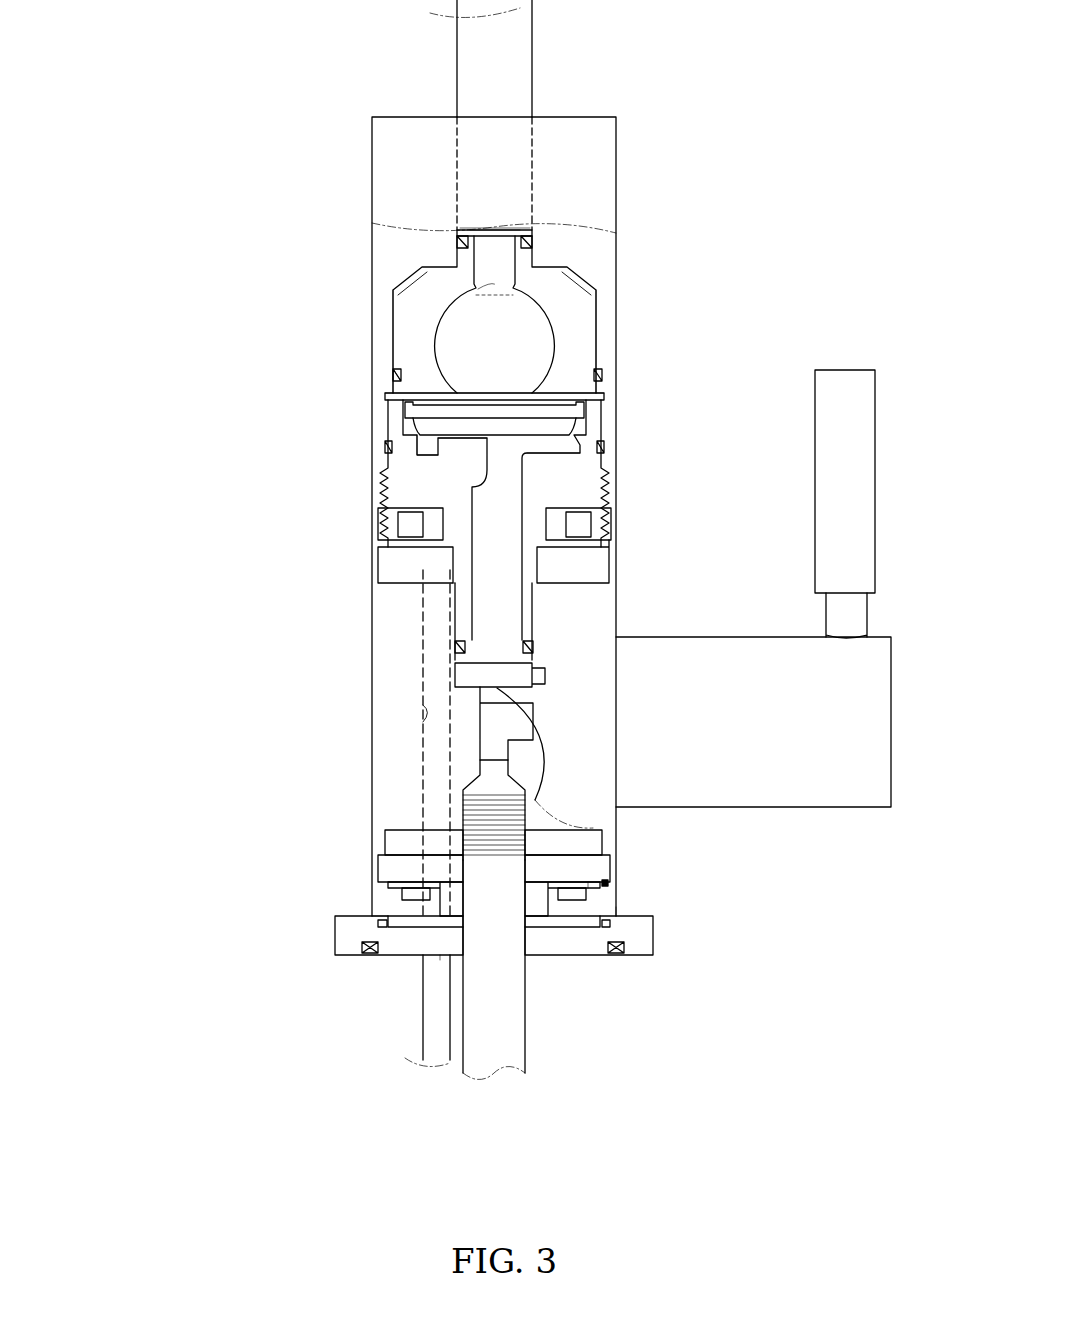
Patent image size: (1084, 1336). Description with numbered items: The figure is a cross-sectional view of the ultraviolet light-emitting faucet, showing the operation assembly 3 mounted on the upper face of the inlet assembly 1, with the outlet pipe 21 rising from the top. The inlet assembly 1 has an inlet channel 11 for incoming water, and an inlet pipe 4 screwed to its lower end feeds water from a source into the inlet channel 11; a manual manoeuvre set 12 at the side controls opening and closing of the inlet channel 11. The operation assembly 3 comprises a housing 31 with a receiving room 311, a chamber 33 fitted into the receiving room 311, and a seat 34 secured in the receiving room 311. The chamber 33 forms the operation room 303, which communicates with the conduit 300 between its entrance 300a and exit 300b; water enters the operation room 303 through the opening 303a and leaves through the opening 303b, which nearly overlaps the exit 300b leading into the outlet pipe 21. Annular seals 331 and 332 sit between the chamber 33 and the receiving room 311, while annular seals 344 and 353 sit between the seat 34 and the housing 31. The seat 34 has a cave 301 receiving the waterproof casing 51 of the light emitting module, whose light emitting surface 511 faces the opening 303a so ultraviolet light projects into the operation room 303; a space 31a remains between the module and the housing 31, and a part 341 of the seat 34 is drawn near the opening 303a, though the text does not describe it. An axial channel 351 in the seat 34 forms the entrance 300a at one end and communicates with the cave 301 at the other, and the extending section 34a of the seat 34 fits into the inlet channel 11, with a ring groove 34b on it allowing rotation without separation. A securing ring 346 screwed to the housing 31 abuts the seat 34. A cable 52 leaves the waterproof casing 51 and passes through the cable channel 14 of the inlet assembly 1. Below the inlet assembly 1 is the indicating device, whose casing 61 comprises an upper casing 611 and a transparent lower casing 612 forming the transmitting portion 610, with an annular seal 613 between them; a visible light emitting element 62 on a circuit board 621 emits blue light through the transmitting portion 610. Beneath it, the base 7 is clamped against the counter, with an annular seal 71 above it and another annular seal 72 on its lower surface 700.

The inlet assembly 1 is at (348, 841).
The outlet pipe 21 is at (535, 57).
The operation assembly 3 is at (350, 318).
The housing 31 is at (380, 297).
The space 31a is at (597, 410).
The chamber 33 is at (403, 323).
The operation room 303 is at (457, 322).
The opening 303a is at (455, 385).
The opening 303b is at (487, 230).
The conduit 300 is at (731, 597).
The entrance 300a is at (560, 602).
The exit 300b is at (503, 225).
The receiving room 311 is at (422, 270).
The annular seal 331 is at (397, 375).
The annular seal 332 is at (457, 238).
The seat plate 341 is at (400, 412).
The annular seal 344 is at (387, 447).
The securing ring 346 is at (393, 520).
The seat 34 is at (480, 545).
The extending section 34a is at (457, 603).
The ring groove 34b is at (427, 640).
The axial channel 351 is at (510, 563).
The annular seal 353 is at (477, 683).
The cave 301 is at (560, 447).
The waterproof casing 51 is at (418, 445).
The light emitting surface 511 is at (428, 438).
The cable 52 is at (450, 572).
The cable channel 14 is at (432, 718).
The inlet channel 11 is at (480, 692).
The inlet pipe 4 is at (512, 1015).
The casing 61 is at (207, 990).
The upper casing 611 is at (380, 872).
The lower casing 612 is at (380, 897).
The annular seal 613 is at (585, 882).
The circuit board 621 is at (605, 881).
The visible light emitting element 62 is at (415, 897).
The transmitting portion 610 is at (618, 907).
The base 7 is at (642, 948).
The annular seal 71 is at (377, 920).
The annular seal 72 is at (367, 947).
The lower surface 700 is at (440, 965).
The manual manoeuvre set 12 is at (832, 842).